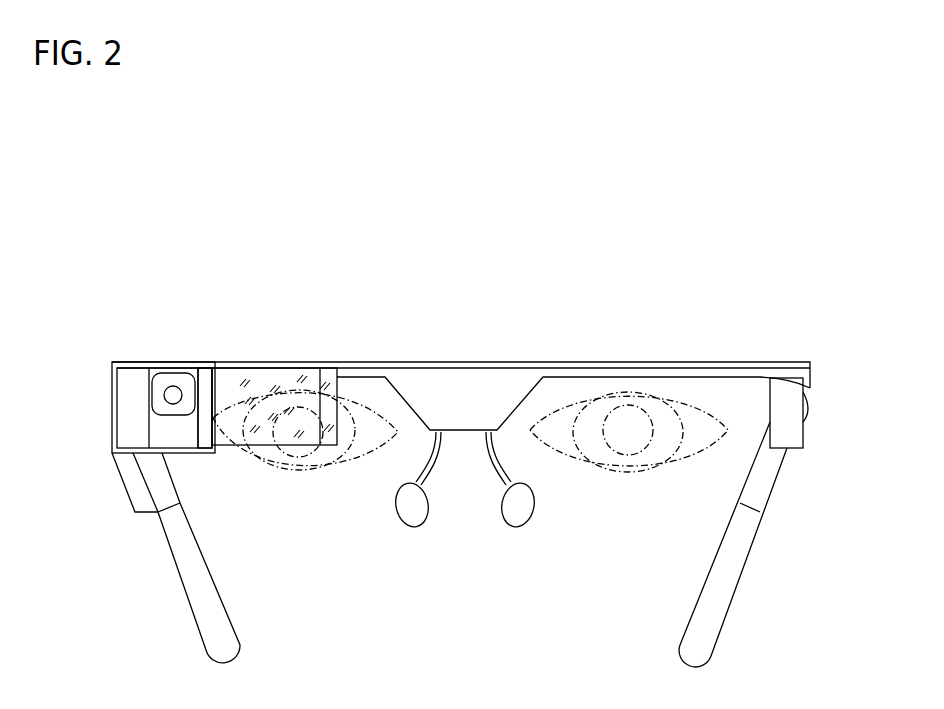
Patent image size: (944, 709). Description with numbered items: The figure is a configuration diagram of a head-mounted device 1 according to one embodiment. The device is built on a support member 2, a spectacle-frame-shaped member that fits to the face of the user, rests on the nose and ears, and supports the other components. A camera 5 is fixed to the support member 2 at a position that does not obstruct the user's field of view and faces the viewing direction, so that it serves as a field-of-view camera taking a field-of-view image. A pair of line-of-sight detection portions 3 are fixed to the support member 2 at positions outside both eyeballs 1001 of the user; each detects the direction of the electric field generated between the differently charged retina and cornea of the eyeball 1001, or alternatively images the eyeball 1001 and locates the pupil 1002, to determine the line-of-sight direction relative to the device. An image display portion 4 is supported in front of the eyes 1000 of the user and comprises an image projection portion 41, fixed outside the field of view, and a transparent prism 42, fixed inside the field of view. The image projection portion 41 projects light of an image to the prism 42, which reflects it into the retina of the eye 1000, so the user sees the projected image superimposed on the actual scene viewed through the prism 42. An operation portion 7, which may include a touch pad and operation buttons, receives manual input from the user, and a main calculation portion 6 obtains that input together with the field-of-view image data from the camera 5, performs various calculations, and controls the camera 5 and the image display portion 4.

The head-mounted device 1 is at (750, 275).
The support member 2 is at (508, 366).
The line-of-sight detection portion 3 is at (131, 378).
The image display portion 4 is at (342, 315).
The image projection portion 41 is at (206, 378).
The prism 42 is at (282, 381).
The camera 5 is at (173, 378).
The main calculation portion 6 is at (175, 440).
The operation portion 7 is at (123, 485).
The eye 1000 is at (298, 483).
The eyeball 1001 is at (350, 452).
The pupil 1002 is at (312, 453).